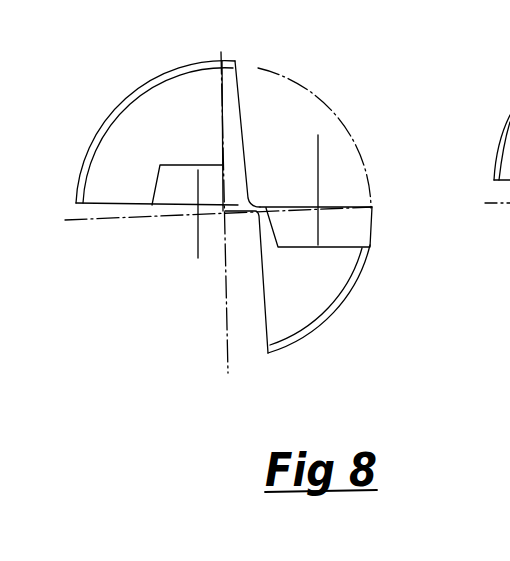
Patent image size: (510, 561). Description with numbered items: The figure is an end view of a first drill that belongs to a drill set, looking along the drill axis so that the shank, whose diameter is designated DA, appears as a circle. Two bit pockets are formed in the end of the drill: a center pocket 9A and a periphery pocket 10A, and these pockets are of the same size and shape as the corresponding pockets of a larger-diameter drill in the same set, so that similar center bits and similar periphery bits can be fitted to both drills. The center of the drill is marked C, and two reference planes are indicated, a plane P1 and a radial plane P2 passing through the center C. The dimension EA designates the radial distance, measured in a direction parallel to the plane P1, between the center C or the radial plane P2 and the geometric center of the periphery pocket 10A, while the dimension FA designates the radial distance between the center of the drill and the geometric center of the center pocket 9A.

The center pocket 9A is at (173, 174).
The periphery pocket 10A is at (337, 230).
The diameter DA is at (273, 110).
The radial distance EA is at (318, 150).
The radial distance FA is at (255, 253).
The center C is at (223, 211).
The plane P1 is at (82, 221).
The radial plane P2 is at (225, 352).